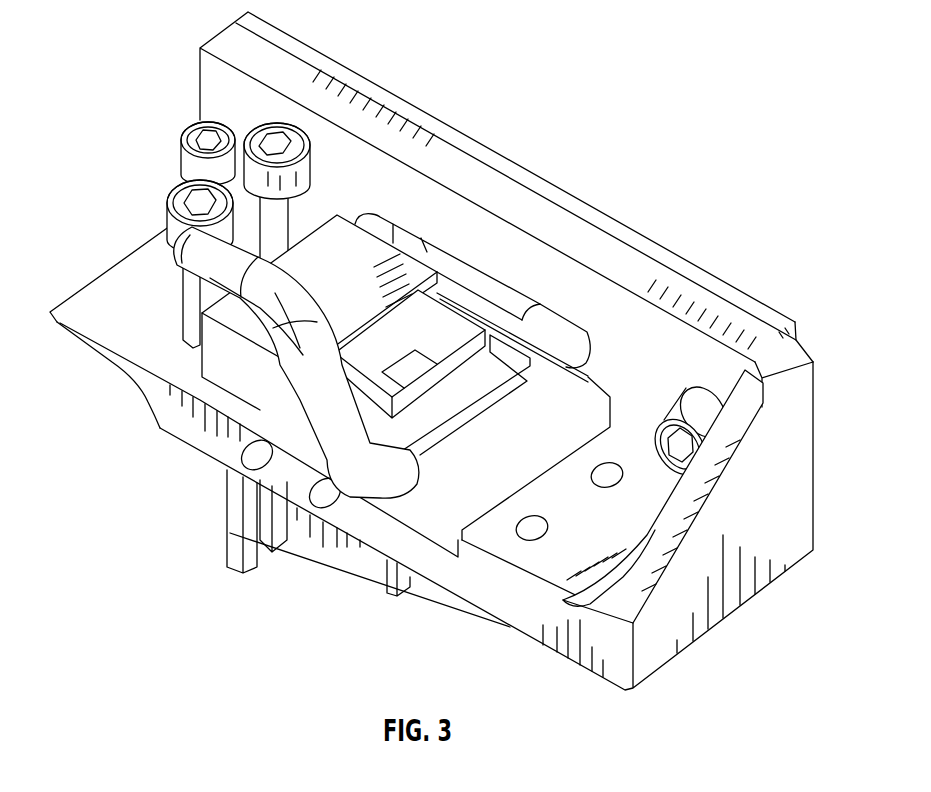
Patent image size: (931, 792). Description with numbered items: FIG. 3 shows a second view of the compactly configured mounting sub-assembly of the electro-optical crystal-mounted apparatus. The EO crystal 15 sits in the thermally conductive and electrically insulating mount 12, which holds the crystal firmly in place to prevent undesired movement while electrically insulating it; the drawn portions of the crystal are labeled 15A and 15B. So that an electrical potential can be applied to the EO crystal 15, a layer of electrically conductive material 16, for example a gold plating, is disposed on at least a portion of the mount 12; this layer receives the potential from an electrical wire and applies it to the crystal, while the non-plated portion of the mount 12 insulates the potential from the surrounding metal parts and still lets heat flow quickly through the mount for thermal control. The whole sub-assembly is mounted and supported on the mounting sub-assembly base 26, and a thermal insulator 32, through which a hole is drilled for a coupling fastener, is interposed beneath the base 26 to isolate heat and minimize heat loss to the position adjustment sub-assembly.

The mount 12 is at (336, 250).
The EO crystal 15 is at (527, 267).
The first rail 15A is at (443, 325).
The second rail 15B is at (540, 310).
The layer of electrically conductive material 16 is at (463, 397).
The mounting sub-assembly base 26 is at (750, 582).
The thermal insulator 32 is at (792, 320).